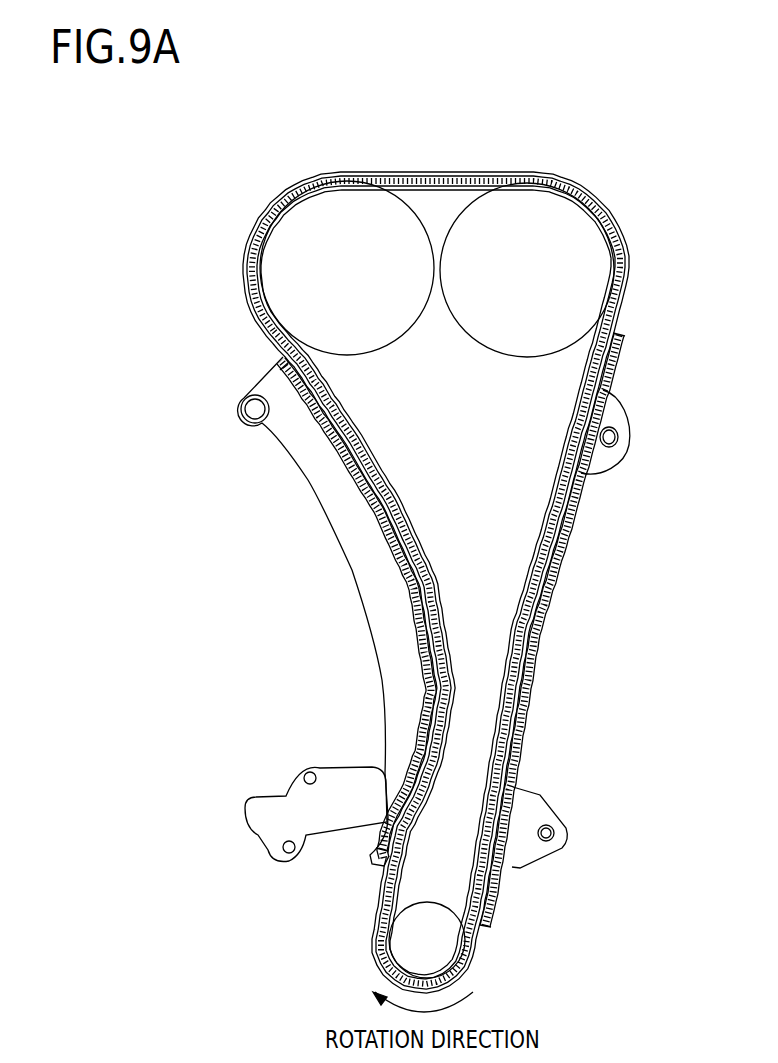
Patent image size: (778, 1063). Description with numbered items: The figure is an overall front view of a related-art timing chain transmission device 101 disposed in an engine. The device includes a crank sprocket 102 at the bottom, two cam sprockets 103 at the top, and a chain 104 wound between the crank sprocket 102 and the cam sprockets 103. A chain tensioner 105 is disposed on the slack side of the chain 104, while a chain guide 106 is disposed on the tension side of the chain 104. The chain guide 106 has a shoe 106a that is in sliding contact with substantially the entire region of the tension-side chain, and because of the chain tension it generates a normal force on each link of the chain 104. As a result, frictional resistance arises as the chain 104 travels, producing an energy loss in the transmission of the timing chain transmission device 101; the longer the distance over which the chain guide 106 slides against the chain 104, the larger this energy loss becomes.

The timing chain transmission device 101 is at (455, 494).
The crank sprocket 102 is at (400, 938).
The cam sprocket 103 is at (337, 203).
The chain 104 is at (418, 183).
The chain tensioner 105 is at (338, 572).
The chain guide 106 is at (576, 630).
The shoe 106a is at (553, 558).